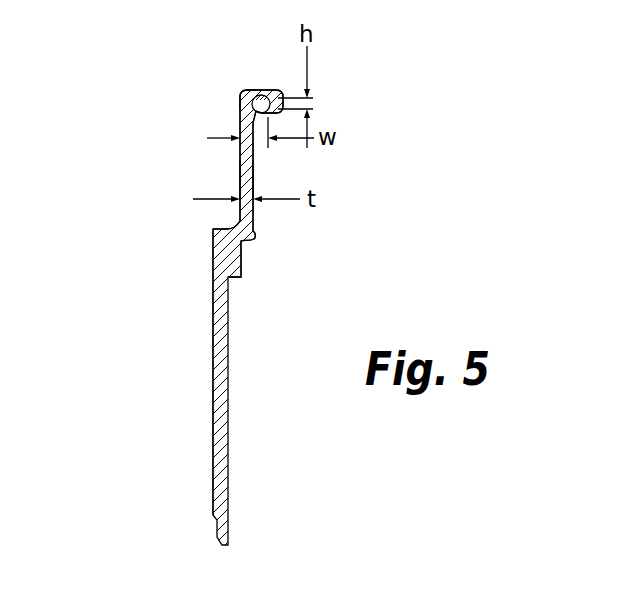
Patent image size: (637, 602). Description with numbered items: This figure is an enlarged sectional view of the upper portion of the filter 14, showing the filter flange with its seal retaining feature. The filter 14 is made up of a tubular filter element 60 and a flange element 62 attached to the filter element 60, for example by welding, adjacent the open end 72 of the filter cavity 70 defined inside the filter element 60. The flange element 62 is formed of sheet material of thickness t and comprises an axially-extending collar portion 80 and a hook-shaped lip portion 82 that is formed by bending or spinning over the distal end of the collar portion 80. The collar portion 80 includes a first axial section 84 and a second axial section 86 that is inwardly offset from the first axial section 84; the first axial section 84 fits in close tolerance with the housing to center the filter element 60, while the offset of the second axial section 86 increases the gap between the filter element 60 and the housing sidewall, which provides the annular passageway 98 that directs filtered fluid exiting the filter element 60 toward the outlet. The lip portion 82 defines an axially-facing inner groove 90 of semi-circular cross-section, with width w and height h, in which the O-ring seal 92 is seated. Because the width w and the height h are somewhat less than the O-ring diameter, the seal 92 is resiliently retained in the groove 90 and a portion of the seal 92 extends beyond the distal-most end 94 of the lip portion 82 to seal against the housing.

The filter 14 is at (125, 311).
The filter element 60 is at (203, 422).
The flange element 62 is at (231, 150).
The filter cavity 70 is at (195, 362).
The open end 72 is at (227, 226).
The collar portion 80 is at (262, 168).
The lip portion 82 is at (263, 81).
The first axial section 84 is at (240, 182).
The second axial section 86 is at (241, 258).
The inner groove 90 is at (241, 93).
The seal 92 is at (240, 122).
The distal-most end 94 is at (273, 115).
The annular passageway 98 is at (275, 370).